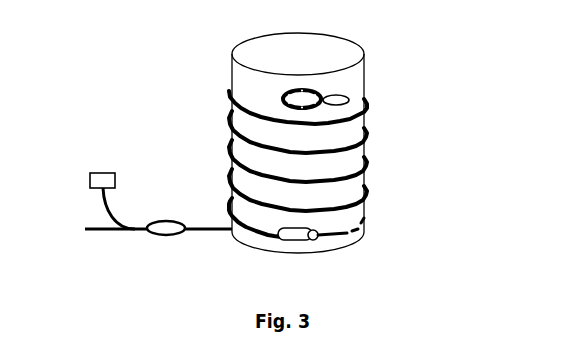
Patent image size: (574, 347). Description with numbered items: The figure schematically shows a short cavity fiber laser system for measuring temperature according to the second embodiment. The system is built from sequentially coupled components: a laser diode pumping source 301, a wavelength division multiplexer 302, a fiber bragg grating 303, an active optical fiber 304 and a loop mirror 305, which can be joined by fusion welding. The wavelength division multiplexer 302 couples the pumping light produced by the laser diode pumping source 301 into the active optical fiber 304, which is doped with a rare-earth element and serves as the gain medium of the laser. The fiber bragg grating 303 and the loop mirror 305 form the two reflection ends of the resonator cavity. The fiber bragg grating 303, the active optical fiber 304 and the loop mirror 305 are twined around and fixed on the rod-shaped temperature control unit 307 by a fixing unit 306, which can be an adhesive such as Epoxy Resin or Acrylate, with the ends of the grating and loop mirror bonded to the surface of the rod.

The laser diode pumping source 301 is at (103, 182).
The wavelength division multiplexer 302 is at (163, 235).
The fiber bragg grating 303 is at (309, 238).
The active optical fiber 304 is at (232, 145).
The loop mirror 305 is at (331, 93).
The fixing unit 306 is at (317, 106).
The rod-shaped temperature control unit 307 is at (245, 98).